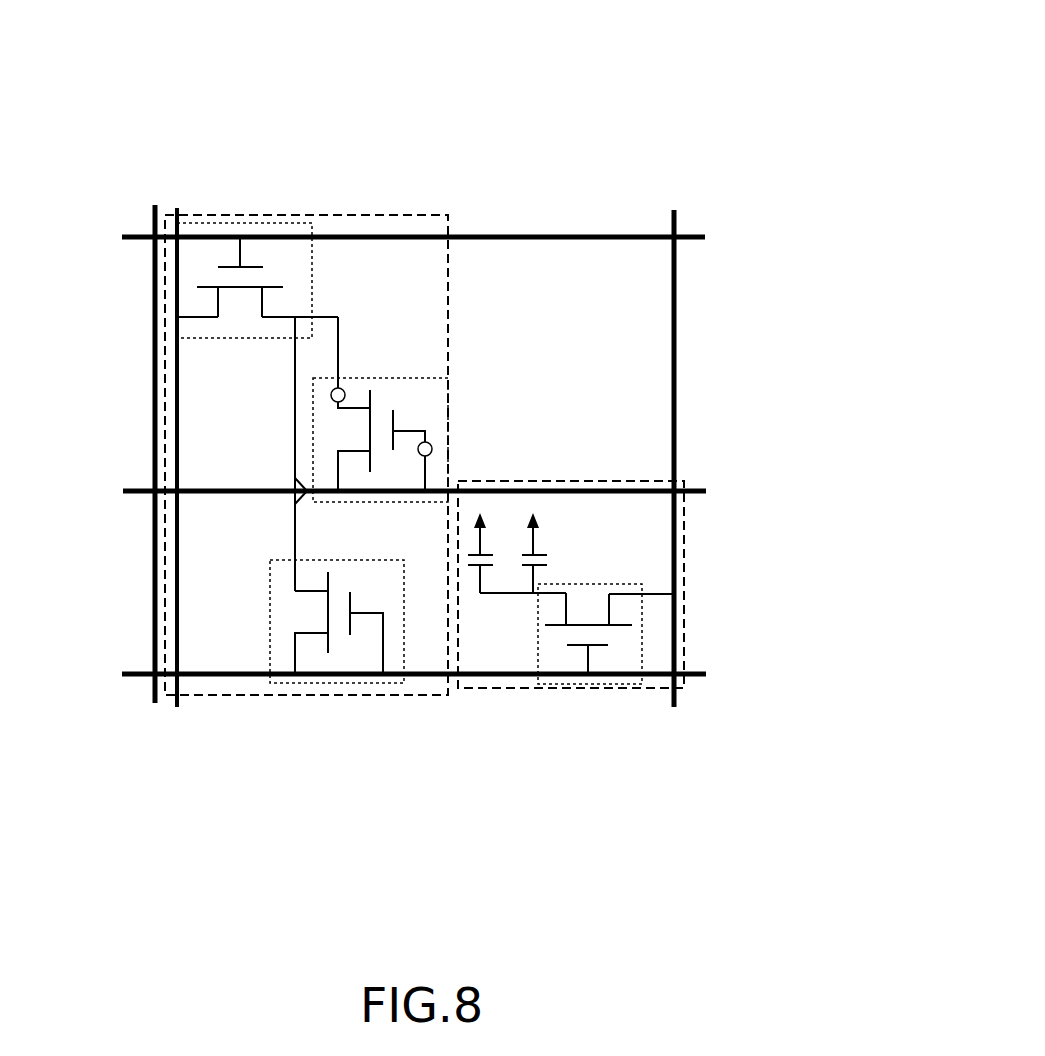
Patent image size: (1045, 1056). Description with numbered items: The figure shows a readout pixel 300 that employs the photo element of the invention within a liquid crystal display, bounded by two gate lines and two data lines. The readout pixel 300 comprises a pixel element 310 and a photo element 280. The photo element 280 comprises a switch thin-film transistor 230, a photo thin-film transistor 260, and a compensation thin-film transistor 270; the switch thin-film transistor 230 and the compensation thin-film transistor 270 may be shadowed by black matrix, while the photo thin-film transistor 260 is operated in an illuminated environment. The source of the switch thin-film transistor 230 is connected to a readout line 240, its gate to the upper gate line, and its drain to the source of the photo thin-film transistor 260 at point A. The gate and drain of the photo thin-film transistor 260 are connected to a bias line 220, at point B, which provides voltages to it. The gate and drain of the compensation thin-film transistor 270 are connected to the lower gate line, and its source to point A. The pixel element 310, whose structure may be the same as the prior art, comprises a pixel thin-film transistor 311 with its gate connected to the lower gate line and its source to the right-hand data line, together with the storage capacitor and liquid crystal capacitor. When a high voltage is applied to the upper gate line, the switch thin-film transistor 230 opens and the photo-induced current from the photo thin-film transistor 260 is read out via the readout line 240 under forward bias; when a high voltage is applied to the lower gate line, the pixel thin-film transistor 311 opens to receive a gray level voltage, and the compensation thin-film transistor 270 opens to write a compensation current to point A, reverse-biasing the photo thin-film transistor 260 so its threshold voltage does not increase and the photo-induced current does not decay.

The readout pixel 300 is at (683, 120).
The bias line 220 is at (692, 490).
The readout line 240 is at (177, 207).
The photo element 280 is at (328, 214).
The switch thin-film transistor 230 is at (243, 222).
The photo thin-film transistor 260 is at (313, 437).
The compensation thin-film transistor 270 is at (270, 577).
The pixel element 310 is at (684, 540).
The pixel thin-film transistor 311 is at (684, 613).